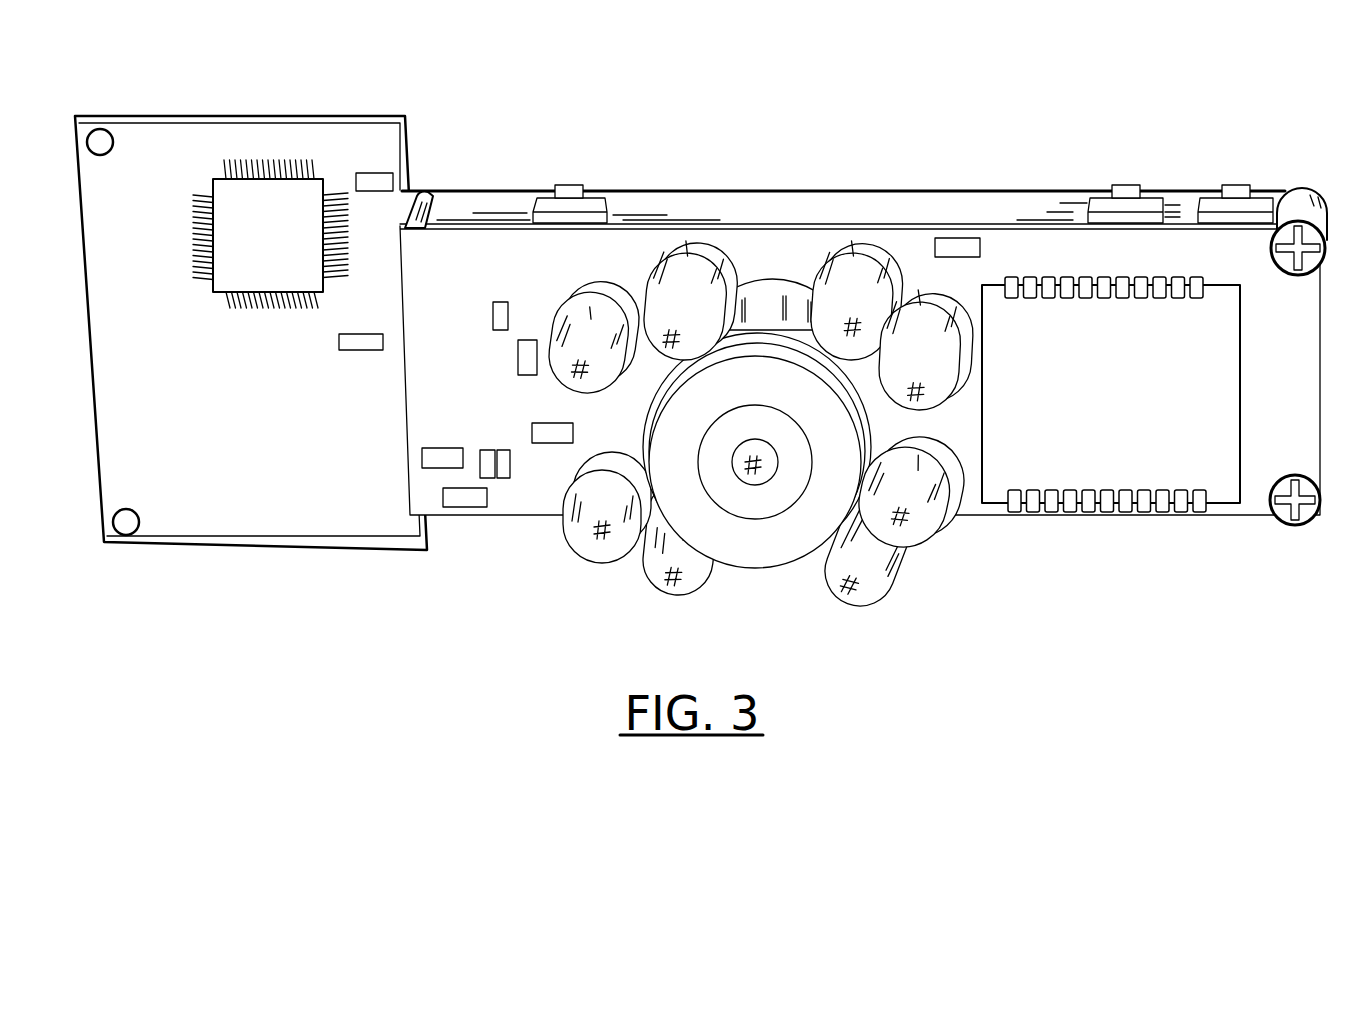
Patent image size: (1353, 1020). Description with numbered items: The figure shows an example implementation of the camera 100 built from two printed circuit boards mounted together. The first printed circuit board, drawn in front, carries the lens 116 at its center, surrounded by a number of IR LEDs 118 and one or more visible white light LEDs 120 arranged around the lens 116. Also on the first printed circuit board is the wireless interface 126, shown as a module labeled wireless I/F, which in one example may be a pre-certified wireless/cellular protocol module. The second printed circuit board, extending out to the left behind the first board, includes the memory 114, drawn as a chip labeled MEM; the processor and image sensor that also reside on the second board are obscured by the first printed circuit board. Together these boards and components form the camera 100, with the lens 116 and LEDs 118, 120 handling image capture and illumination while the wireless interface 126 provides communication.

The camera 100 is at (701, 328).
The memory 114 is at (221, 284).
The lens 116 is at (757, 570).
The IR LEDs 118 is at (583, 562).
The visible light LEDs 120 is at (895, 573).
The wireless interface 126 is at (1240, 398).